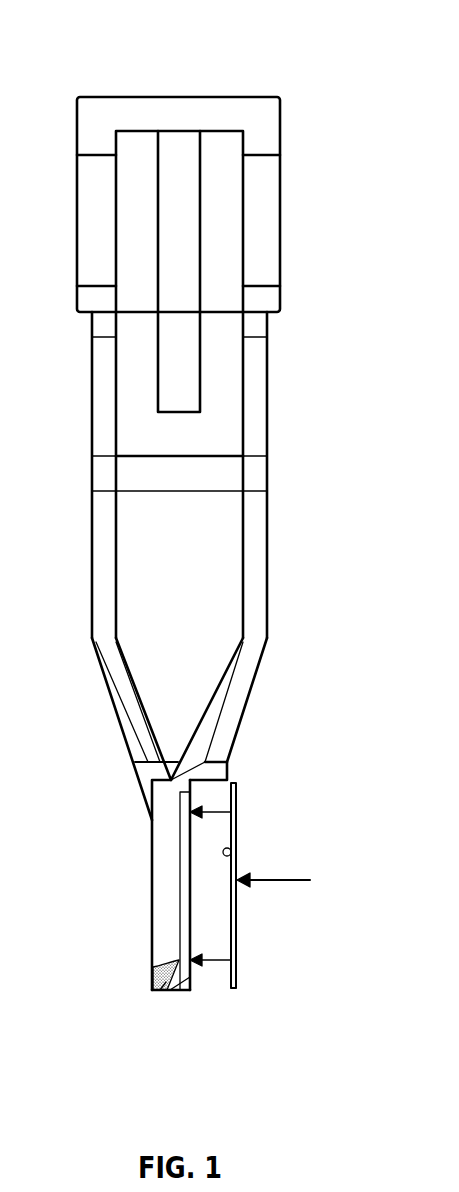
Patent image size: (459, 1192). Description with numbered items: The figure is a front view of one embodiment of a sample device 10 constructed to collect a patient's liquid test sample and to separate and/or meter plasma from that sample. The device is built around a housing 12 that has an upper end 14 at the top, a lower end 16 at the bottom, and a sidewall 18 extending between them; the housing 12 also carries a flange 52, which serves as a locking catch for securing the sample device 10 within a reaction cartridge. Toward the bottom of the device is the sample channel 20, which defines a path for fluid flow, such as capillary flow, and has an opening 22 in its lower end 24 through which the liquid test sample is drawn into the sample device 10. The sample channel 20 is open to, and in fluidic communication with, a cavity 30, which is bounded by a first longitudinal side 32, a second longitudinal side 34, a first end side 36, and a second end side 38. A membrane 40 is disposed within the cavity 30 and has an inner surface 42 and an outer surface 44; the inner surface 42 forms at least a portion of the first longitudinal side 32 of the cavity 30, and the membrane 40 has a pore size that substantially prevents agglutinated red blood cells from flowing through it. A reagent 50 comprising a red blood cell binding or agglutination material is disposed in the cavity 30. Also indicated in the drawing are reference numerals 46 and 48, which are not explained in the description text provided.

The sample device 10 is at (292, 53).
The housing 12 is at (283, 178).
The upper end 14 is at (108, 96).
The lower end 16 is at (158, 992).
The sidewall 18 is at (267, 425).
The sample channel 20 is at (170, 991).
The opening 22 is at (183, 993).
The lower end 24 is at (163, 993).
The cavity 30 is at (163, 917).
The first longitudinal side 32 is at (193, 803).
The second longitudinal side 34 is at (152, 842).
The first end side 36 is at (171, 783).
The second end side 38 is at (190, 997).
The membrane 40 is at (290, 880).
The inner surface 42 is at (231, 855).
The outer surface 44 is at (237, 932).
The gap 46 is at (237, 788).
The plate end 48 is at (235, 992).
The reagent 50 is at (158, 968).
The flange 52 is at (165, 365).